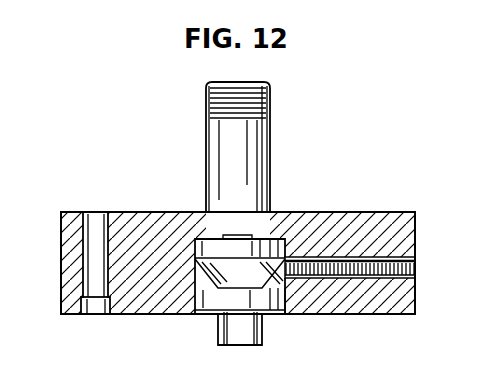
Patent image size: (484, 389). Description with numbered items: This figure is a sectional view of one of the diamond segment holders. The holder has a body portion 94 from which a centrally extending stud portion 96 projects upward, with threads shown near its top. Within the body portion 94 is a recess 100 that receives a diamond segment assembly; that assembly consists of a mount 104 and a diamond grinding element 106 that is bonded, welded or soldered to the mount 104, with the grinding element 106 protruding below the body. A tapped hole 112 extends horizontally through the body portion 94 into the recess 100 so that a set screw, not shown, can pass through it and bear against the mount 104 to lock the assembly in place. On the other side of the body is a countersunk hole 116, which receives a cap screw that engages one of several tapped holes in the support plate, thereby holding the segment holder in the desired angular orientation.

The body portion 94 is at (147, 212).
The stud portion 96 is at (258, 155).
The recess 100 is at (197, 276).
The mount 104 is at (270, 306).
The diamond grinding element 106 is at (238, 337).
The tapped hole 112 is at (396, 253).
The countersunk hole 116 is at (93, 258).